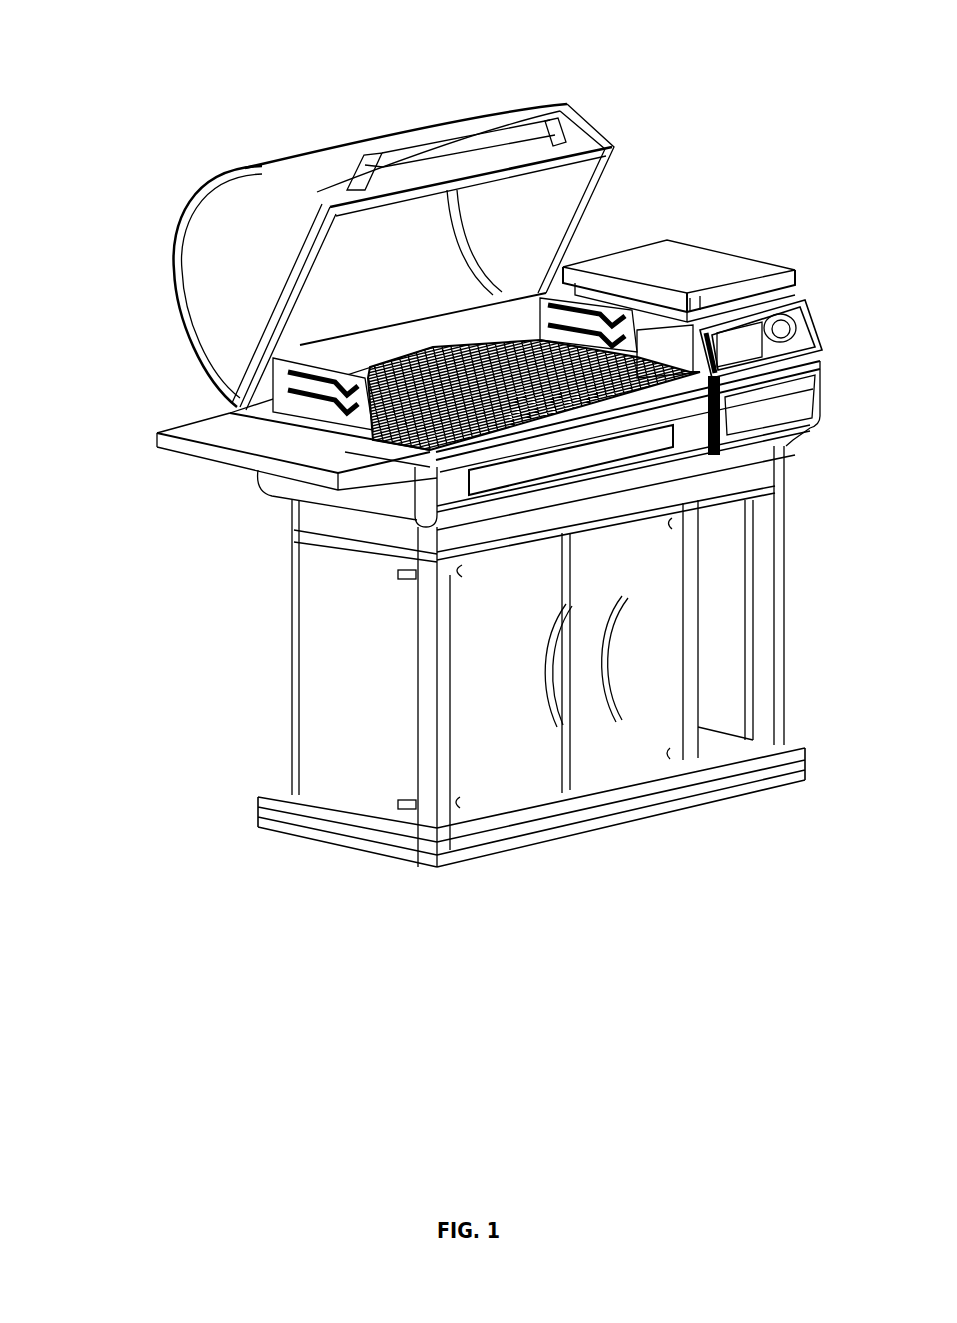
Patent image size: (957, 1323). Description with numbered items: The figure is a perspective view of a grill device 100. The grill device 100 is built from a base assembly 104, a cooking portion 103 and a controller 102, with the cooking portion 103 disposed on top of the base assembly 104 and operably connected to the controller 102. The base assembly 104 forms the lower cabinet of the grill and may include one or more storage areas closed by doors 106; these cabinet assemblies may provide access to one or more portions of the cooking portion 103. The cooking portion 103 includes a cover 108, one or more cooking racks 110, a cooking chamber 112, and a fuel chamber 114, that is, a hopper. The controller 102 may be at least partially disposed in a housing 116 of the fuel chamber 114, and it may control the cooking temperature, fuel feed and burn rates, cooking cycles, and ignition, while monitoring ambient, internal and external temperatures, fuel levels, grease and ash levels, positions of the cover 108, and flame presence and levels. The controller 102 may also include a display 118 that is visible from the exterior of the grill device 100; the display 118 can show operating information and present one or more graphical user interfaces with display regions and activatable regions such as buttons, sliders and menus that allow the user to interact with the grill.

The grill device 100 is at (744, 55).
The controller 102 is at (767, 350).
The cooking portion 103 is at (117, 153).
The base assembly 104 is at (163, 487).
The doors 106 is at (470, 743).
The cover 108 is at (343, 147).
The cooking racks 110 is at (540, 312).
The cooking chamber 112 is at (428, 338).
The fuel chamber 114 is at (797, 457).
The housing 116 is at (815, 333).
The display 118 is at (742, 343).